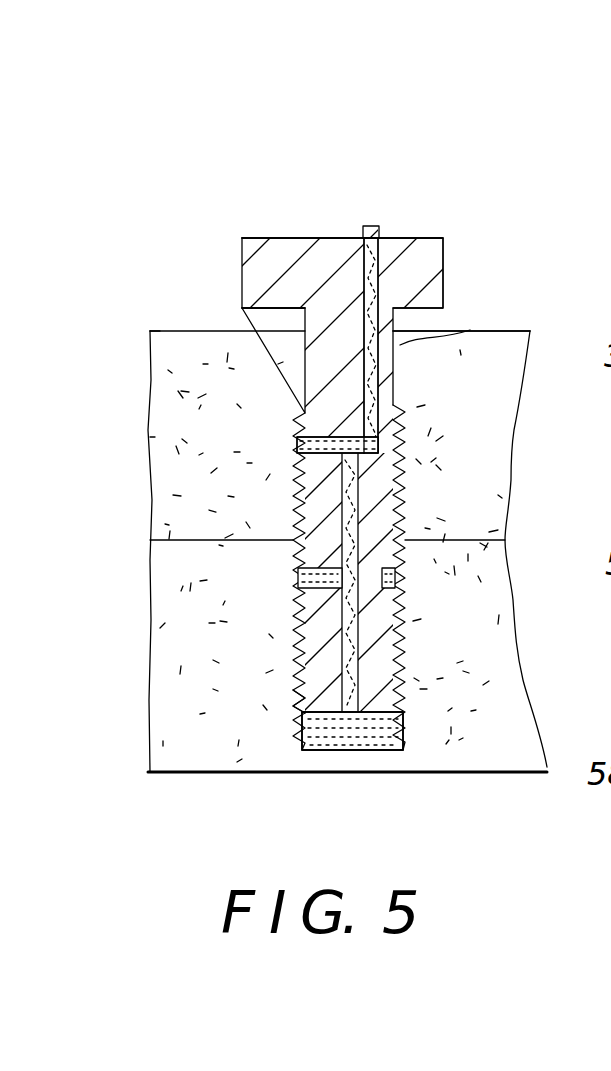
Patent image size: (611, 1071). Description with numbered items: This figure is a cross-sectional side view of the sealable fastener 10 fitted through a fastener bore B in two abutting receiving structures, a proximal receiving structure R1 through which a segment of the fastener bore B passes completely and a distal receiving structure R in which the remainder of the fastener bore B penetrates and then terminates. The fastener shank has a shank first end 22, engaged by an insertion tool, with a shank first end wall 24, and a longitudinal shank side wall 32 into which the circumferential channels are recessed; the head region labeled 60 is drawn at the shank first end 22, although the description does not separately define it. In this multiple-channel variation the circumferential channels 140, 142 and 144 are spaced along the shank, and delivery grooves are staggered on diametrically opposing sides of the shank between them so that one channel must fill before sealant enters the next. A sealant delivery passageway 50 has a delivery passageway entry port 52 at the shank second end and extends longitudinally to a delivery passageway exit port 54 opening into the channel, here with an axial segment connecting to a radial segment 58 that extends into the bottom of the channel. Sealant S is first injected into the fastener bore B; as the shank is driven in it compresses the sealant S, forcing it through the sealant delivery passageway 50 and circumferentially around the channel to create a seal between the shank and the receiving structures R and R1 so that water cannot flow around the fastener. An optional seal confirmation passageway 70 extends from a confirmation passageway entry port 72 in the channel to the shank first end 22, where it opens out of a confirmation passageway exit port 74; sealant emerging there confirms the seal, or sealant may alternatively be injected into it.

The sealable fastener 10 is at (486, 268).
The shank first end 22 is at (241, 291).
The shank first end wall 24 is at (273, 236).
The shank side wall 32 is at (400, 408).
The sealant delivery passageway 50 is at (312, 668).
The delivery passageway entry port 52 is at (307, 236).
The delivery passageway exit port 54 is at (297, 443).
The radial segment 58 is at (300, 418).
The bolt head 60 is at (241, 268).
The seal confirmation passageway 70 is at (385, 290).
The confirmation passageway entry port 72 is at (362, 440).
The confirmation passageway exit port 74 is at (364, 232).
The circumferential channel 140 is at (400, 443).
The circumferential channel 142 is at (396, 582).
The circumferential channel 144 is at (400, 727).
The receiving structure R is at (155, 655).
The proximal receiving structure R1 is at (148, 438).
The sealant S is at (378, 237).
The fastener bore B is at (395, 403).